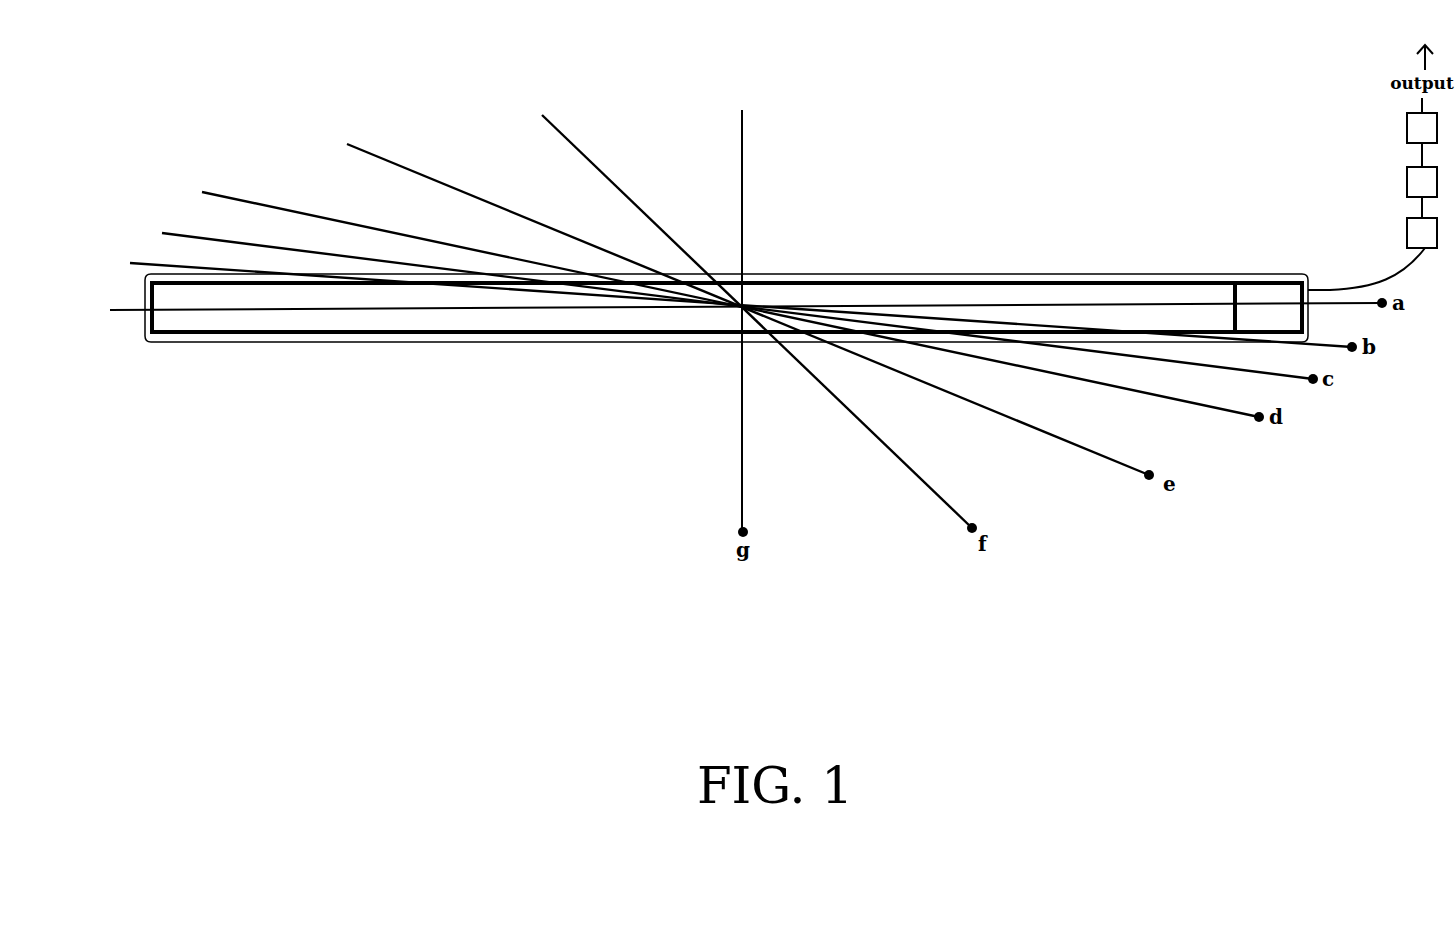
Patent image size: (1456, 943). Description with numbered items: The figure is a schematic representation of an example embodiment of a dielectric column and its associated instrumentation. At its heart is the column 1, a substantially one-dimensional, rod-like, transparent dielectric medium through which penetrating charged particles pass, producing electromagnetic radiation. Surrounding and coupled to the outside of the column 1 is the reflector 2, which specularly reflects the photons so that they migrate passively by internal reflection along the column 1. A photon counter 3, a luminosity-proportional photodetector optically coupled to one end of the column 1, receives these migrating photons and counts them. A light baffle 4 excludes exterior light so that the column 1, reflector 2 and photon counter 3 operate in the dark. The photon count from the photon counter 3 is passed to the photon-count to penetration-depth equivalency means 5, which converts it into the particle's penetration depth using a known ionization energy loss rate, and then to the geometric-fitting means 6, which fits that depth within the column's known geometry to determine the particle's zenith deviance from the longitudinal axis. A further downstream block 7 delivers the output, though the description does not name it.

The column 1 is at (852, 296).
The reflector 2 is at (1060, 280).
The photon counter 3 is at (1267, 279).
The light baffle 4 is at (1307, 276).
The photon-count to penetration-depth equivalency means 5 is at (1422, 233).
The geometric-fitting means 6 is at (1422, 182).
The output unit 7 is at (1422, 128).